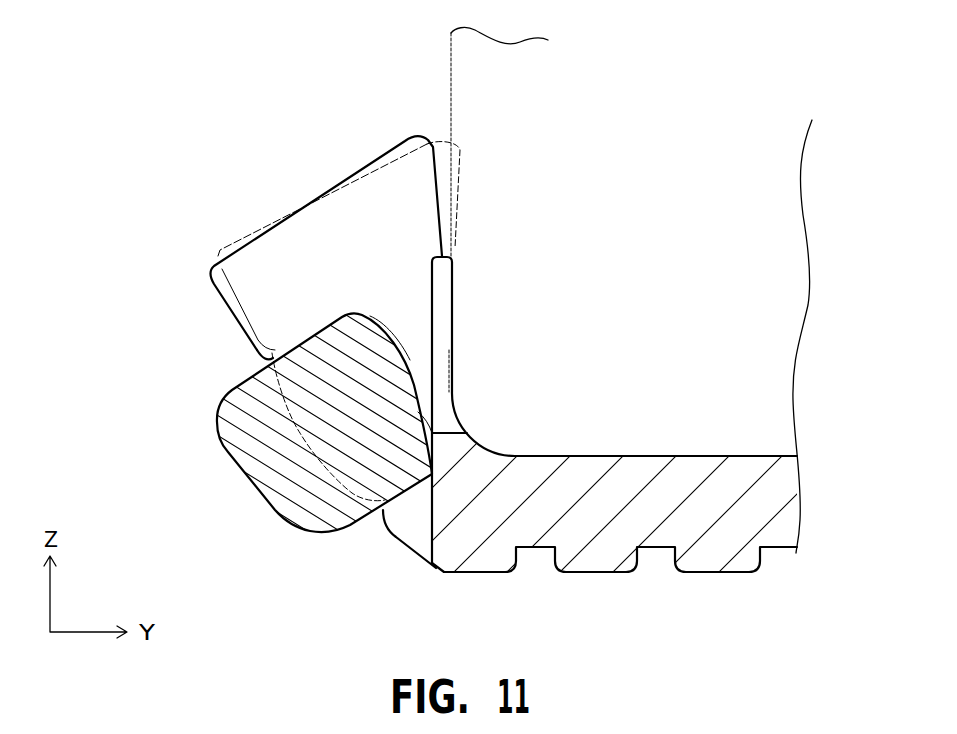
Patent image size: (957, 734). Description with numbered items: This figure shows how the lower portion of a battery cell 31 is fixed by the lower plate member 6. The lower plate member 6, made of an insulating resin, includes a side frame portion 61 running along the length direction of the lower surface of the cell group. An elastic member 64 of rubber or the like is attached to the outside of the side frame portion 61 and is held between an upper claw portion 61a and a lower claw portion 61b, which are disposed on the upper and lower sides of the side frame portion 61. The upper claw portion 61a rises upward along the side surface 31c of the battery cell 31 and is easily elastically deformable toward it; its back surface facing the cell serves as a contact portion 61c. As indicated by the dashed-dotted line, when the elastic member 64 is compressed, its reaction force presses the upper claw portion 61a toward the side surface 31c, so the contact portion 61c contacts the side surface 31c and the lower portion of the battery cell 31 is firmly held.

The lower plate member 6 is at (399, 576).
The battery cell 31 is at (788, 264).
The side surface 31c is at (449, 75).
The side frame portion 61 is at (302, 369).
The upper claw portion 61a is at (230, 316).
The lower claw portion 61b is at (393, 538).
The contact portion 61c is at (440, 163).
The elastic member 64 is at (258, 463).